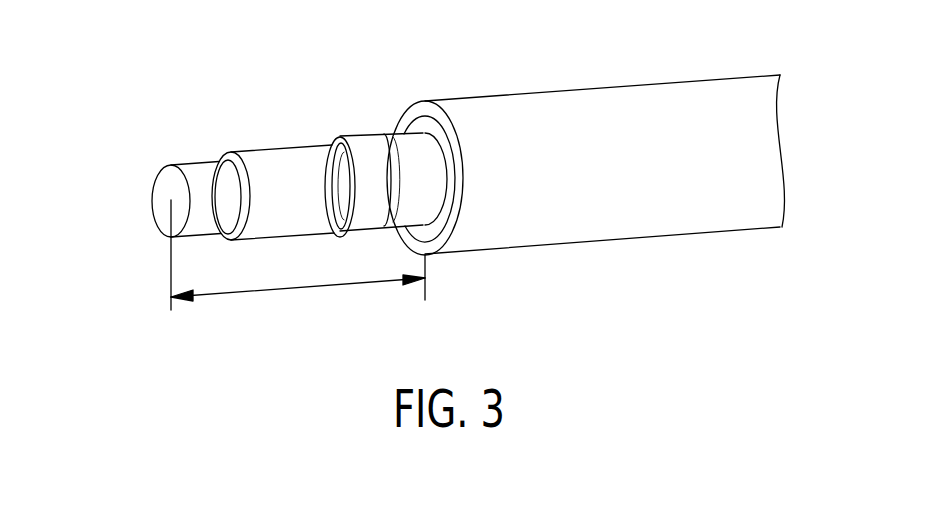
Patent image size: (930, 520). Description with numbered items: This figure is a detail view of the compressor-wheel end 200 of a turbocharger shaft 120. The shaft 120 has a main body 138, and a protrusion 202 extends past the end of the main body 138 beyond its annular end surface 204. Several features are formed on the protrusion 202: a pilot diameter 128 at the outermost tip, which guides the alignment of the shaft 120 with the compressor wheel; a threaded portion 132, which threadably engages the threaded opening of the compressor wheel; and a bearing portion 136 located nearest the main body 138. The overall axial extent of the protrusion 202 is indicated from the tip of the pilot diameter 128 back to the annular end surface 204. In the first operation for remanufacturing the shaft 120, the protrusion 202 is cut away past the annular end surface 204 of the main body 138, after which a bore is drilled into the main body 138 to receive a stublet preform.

The shaft 120 is at (737, 98).
The pilot diameter 128 is at (197, 174).
The threaded portion 132 is at (268, 158).
The bearing portion 136 is at (357, 147).
The main body 138 is at (490, 112).
The compressor-wheel end 200 is at (133, 223).
The protrusion 202 is at (312, 287).
The annular end surface 204 is at (422, 108).